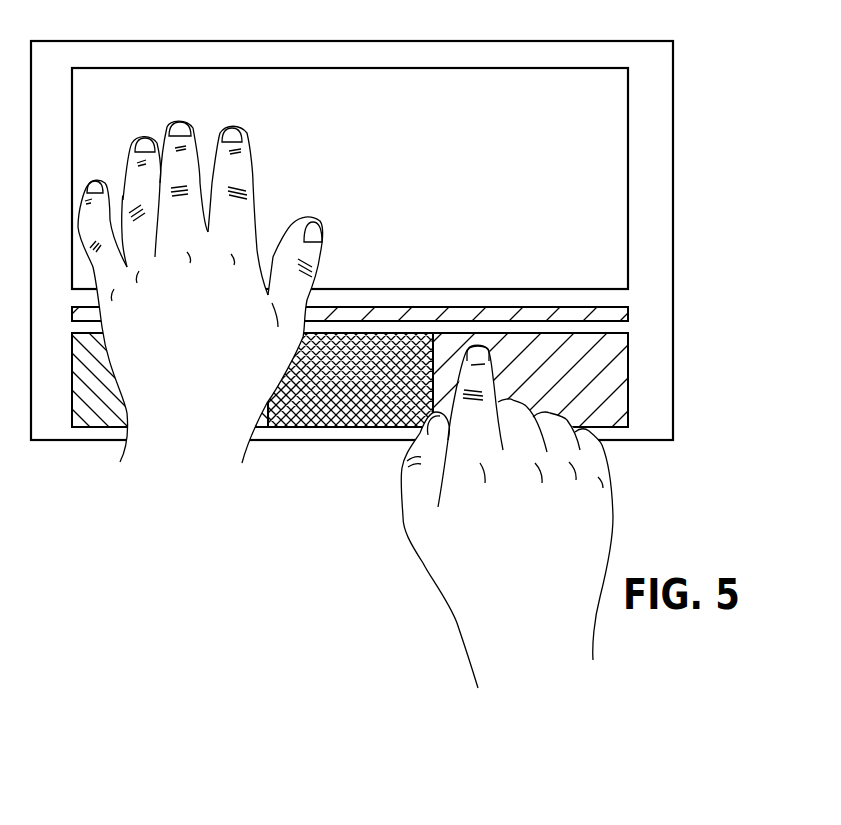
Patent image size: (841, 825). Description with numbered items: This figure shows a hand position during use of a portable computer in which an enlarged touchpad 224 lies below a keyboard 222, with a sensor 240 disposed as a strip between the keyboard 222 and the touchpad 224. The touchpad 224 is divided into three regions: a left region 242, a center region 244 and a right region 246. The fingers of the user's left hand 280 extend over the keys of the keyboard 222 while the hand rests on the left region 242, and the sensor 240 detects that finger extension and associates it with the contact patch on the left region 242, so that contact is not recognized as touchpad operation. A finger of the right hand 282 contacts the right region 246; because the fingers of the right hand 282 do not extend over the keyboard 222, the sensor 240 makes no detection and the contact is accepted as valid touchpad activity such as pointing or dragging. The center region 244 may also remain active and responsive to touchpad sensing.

The keyboard 222 is at (593, 155).
The touchpad 224 is at (652, 370).
The sensor 240 is at (615, 312).
The left region 242 is at (102, 415).
The center region 244 is at (357, 413).
The right region 246 is at (617, 410).
The left hand 280 is at (182, 437).
The right hand 282 is at (470, 588).